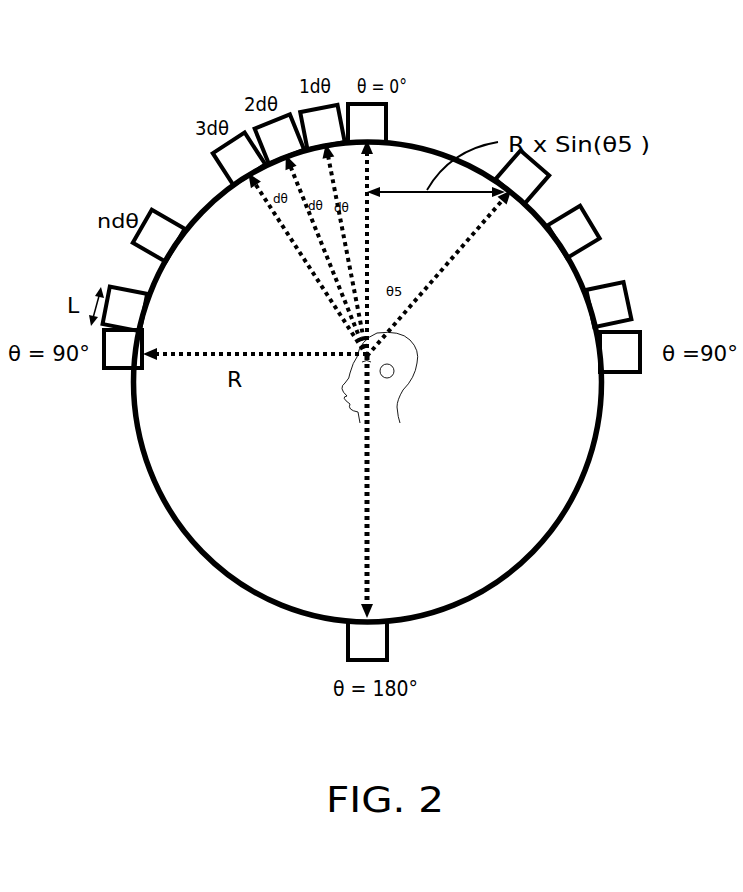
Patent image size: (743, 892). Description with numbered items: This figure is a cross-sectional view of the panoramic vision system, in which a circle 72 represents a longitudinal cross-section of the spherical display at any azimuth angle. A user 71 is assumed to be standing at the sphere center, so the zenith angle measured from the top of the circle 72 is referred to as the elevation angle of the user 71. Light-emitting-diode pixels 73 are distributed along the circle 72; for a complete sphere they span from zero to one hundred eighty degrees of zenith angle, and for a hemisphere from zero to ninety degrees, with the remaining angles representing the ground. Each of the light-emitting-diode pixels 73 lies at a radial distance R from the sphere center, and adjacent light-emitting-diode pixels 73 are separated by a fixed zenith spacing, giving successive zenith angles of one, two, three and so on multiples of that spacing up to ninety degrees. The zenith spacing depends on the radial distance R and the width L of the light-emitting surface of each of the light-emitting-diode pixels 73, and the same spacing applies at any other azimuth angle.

The user 71 is at (360, 406).
The circle 72 is at (157, 496).
The light-emitting-diode pixels 73 is at (117, 370).